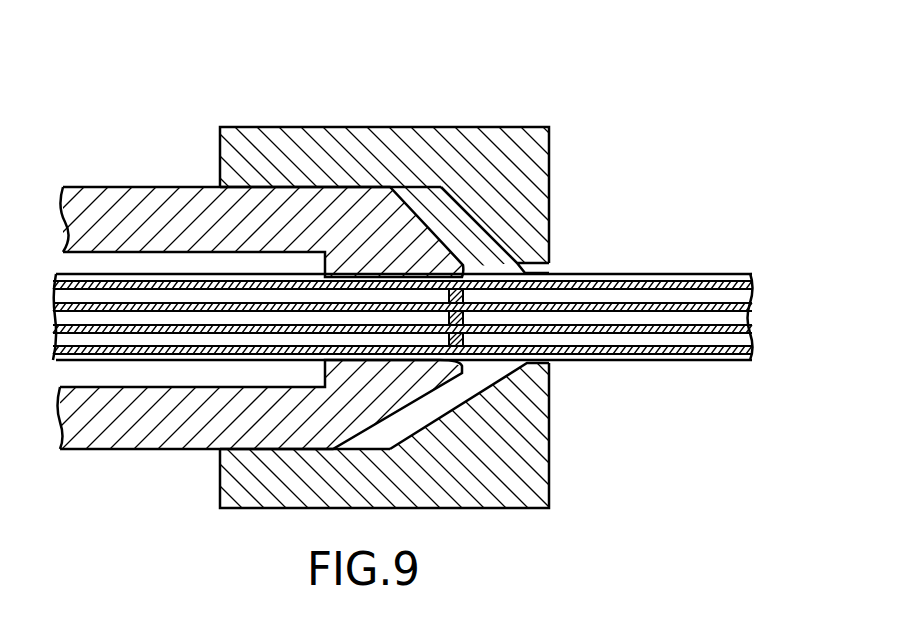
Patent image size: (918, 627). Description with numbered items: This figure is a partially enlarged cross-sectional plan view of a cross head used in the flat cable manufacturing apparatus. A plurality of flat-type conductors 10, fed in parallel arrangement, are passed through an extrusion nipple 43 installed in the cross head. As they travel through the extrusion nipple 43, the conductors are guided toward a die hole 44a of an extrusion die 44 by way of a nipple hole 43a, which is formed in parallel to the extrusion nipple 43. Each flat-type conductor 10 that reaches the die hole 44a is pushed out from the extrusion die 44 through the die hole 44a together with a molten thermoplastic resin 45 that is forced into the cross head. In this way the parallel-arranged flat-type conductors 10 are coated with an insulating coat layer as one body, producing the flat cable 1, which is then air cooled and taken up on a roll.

The flat cable 1 is at (710, 272).
The flat-type conductors 10 is at (207, 327).
The extrusion nipple 43 is at (92, 195).
The nipple hole 43a is at (478, 275).
The extrusion die 44 is at (446, 138).
The die hole 44a is at (558, 268).
The molten thermoplastic resin 45 is at (470, 382).